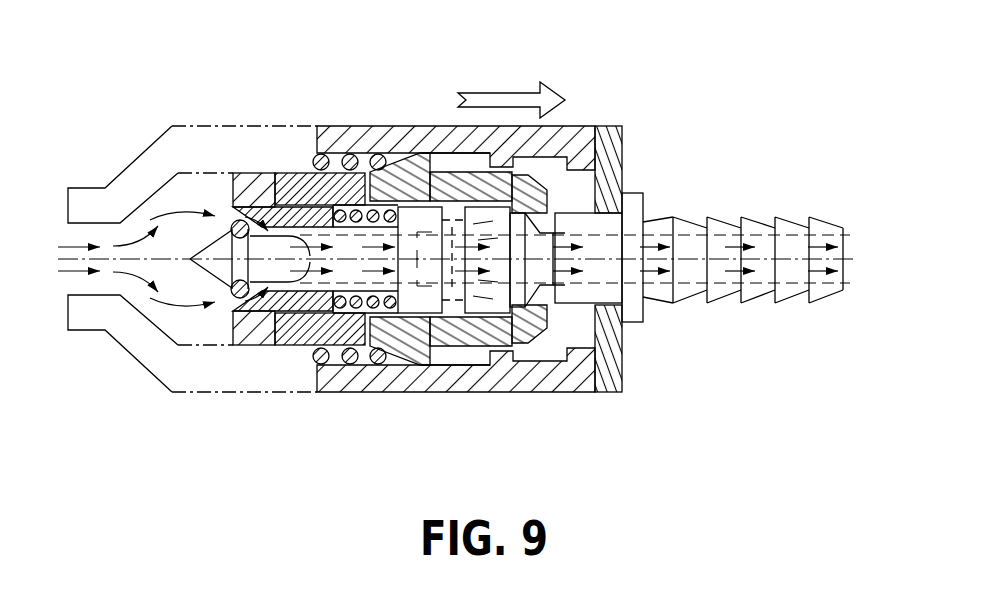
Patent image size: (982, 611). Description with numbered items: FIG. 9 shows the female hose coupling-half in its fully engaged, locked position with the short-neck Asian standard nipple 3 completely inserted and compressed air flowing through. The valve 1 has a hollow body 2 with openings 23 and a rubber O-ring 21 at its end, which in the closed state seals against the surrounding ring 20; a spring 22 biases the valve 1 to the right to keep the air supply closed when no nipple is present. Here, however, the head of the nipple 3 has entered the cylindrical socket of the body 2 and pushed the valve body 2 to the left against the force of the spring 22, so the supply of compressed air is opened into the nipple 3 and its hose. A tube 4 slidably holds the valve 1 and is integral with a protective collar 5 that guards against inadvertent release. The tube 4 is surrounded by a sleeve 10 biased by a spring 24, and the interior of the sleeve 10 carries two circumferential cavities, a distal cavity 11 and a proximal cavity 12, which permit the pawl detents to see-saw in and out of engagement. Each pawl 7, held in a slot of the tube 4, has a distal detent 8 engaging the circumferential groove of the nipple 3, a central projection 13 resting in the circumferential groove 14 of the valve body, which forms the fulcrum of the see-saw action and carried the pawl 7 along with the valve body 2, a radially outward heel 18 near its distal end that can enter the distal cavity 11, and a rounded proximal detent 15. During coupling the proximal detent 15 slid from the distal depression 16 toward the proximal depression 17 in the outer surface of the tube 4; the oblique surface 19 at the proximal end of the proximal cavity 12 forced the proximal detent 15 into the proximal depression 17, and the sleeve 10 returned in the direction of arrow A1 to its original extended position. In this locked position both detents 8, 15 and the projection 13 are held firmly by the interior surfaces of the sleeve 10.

The valve 1 is at (399, 297).
The hollow body 2 is at (372, 300).
The nipple 3 is at (636, 215).
The tube 4 is at (284, 190).
The protective collar 5 is at (600, 385).
The pawl 7 is at (528, 180).
The distal detent 8 is at (612, 160).
The sleeve 10 is at (580, 140).
The distal cavity 11 is at (495, 375).
The proximal cavity 12 is at (473, 185).
The central projection 13 is at (432, 318).
The circumferential groove 14 is at (410, 322).
The proximal detent 15 is at (406, 175).
The distal depression 16 is at (438, 160).
The proximal depression 17 is at (344, 158).
The heel 18 is at (555, 380).
The oblique surface 19 is at (405, 170).
The surrounding ring 20 is at (243, 312).
The O-ring 21 is at (224, 300).
The spring 22 is at (358, 305).
The openings 23 is at (262, 212).
The spring 24 is at (293, 205).
The arrow A1 is at (518, 96).